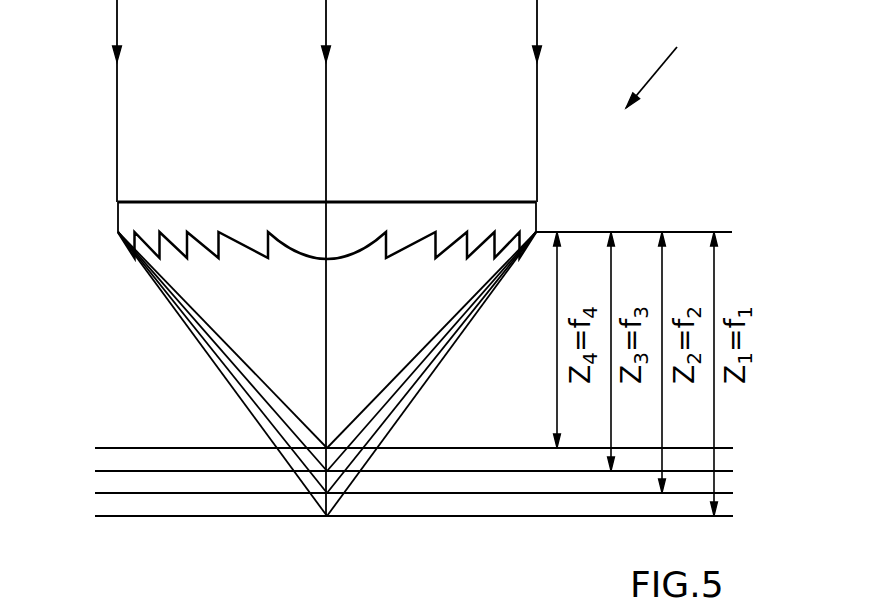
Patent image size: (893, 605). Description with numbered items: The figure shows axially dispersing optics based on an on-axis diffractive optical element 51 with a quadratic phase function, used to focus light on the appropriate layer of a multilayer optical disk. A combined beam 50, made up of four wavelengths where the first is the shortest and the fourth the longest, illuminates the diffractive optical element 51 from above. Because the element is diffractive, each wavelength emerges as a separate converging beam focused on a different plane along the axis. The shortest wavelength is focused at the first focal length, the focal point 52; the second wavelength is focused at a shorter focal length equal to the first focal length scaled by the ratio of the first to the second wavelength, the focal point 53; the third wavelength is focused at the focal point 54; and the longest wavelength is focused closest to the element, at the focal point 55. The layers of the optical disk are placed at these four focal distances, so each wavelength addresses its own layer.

The combined beam 50 is at (326, 135).
The diffractive optical element 51 is at (133, 213).
The focal point of wavelength λ1 52 is at (312, 506).
The focal point of wavelength λ2 53 is at (343, 480).
The focal point of wavelength λ3 54 is at (313, 462).
The focal point of wavelength λ4 55 is at (407, 362).